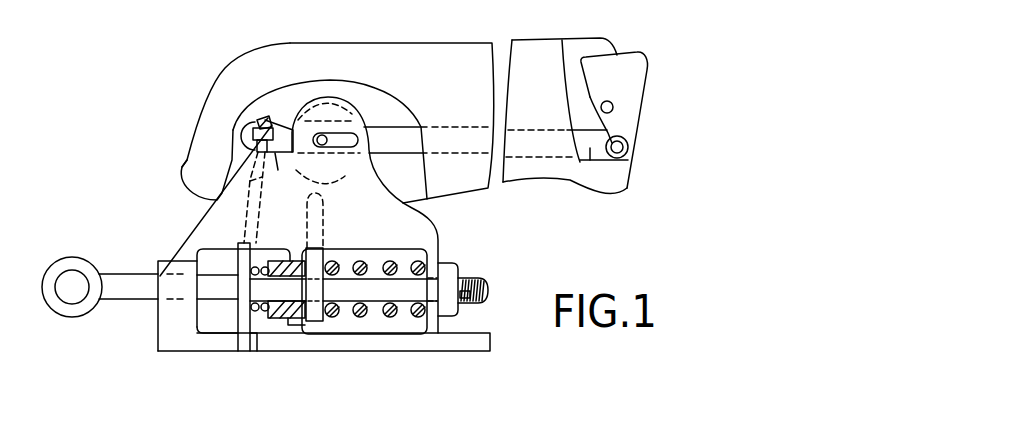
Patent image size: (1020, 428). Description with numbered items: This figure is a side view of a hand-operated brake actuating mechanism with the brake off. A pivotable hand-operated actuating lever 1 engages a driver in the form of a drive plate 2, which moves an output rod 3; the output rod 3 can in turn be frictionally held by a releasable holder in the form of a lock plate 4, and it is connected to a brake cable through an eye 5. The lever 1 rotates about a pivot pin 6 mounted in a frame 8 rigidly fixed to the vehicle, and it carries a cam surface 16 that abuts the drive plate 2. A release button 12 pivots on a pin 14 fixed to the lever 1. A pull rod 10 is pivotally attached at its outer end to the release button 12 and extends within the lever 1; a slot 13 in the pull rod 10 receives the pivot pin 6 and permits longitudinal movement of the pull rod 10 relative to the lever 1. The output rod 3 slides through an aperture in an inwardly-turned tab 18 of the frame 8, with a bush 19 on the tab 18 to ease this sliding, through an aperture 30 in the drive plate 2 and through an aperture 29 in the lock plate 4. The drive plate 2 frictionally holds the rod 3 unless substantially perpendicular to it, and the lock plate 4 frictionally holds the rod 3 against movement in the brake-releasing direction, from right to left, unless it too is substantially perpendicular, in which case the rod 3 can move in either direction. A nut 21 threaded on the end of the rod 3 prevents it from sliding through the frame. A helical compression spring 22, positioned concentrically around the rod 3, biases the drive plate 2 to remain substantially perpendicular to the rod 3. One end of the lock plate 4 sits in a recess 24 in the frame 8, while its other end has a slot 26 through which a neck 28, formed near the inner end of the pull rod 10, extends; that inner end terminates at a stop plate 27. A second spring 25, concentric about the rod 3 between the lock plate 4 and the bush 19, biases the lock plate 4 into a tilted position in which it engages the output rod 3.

The actuating lever 1 is at (467, 55).
The drive plate 2 is at (314, 316).
The output rod 3 is at (132, 290).
The lock plate 4 is at (198, 258).
The eye 5 is at (73, 293).
The pivot pin 6 is at (322, 135).
The frame 8 is at (436, 222).
The pull rod 10 is at (590, 152).
The release button 12 is at (638, 98).
The slot 13 is at (350, 127).
The pin 14 is at (608, 100).
The cam surface 16 is at (340, 180).
The inwardly-turned tab 18 is at (292, 326).
The bush 19 is at (281, 318).
The nut 21 is at (443, 312).
The helical compression spring 22 is at (391, 316).
The recess 24 is at (236, 340).
The second spring 25 is at (243, 268).
The slot 26 is at (254, 151).
The stop plate 27 is at (247, 135).
The neck 28 is at (284, 124).
The aperture 29 is at (242, 290).
The aperture 30 is at (318, 291).